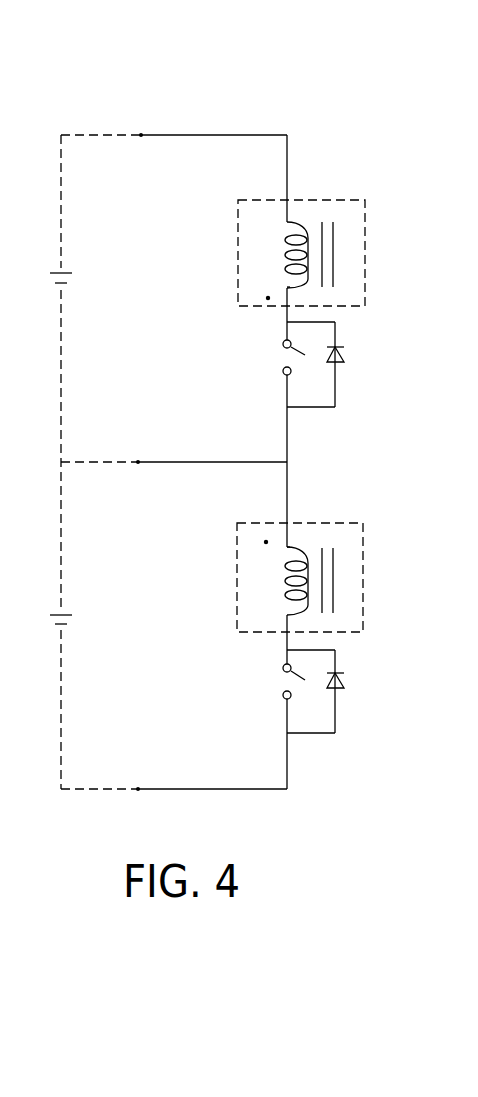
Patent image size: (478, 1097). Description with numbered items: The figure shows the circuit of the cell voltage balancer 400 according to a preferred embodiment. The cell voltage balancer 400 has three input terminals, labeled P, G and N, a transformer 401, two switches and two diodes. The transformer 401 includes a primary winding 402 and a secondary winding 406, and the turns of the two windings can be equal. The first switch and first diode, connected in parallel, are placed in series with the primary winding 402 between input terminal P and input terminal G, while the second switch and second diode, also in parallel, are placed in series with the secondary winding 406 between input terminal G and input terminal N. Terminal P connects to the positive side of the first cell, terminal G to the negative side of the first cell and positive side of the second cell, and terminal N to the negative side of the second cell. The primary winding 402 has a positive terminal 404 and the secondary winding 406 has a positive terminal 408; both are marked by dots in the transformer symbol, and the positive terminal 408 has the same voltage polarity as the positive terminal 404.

The cell voltage balancer 400 is at (296, 70).
The transformer 401 is at (365, 227).
The primary winding 402 is at (280, 247).
The positive terminal 404 is at (288, 288).
The secondary winding 406 is at (280, 593).
The positive terminal 408 is at (289, 547).